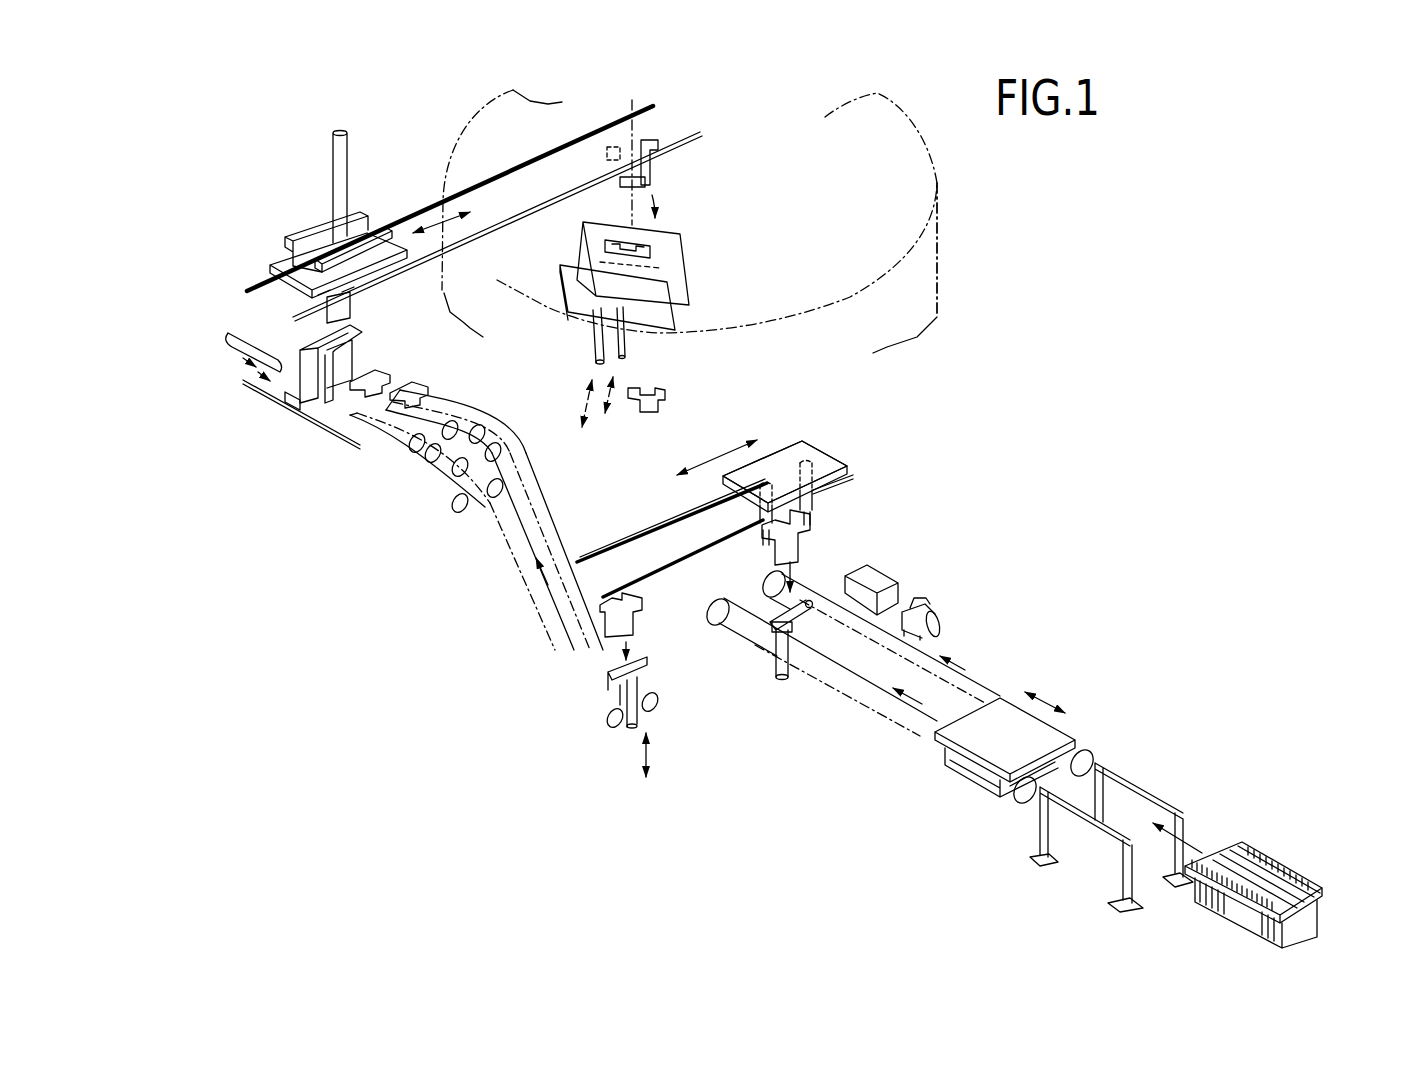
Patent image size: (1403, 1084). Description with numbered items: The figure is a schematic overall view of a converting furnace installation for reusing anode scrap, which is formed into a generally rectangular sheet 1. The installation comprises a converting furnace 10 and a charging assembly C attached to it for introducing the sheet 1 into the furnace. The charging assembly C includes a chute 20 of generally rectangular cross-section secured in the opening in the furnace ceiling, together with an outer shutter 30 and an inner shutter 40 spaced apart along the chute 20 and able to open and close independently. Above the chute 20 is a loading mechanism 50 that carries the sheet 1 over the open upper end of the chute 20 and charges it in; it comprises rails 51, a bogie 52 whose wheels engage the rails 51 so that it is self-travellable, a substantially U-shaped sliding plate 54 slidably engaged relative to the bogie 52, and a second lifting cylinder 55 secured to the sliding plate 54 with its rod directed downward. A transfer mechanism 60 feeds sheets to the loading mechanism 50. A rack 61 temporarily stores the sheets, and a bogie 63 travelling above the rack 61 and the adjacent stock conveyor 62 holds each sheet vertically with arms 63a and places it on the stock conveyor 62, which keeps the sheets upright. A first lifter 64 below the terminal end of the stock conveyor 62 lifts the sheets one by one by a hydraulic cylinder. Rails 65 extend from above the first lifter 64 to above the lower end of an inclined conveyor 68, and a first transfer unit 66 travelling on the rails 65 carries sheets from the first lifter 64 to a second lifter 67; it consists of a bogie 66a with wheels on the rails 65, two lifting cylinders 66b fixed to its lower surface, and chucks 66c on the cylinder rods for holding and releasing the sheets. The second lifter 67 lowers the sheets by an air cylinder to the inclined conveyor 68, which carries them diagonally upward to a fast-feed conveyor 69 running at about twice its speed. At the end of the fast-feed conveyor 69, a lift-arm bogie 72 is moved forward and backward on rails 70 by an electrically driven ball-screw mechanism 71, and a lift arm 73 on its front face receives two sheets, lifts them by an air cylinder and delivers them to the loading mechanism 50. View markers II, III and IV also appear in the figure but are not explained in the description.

The anode scrap sheet 1 is at (352, 303).
The converting furnace 10 is at (937, 190).
The chute 20 is at (694, 307).
The outer shutter 30 is at (565, 280).
The inner shutter 40 is at (665, 335).
The loading mechanism 50 is at (381, 162).
The rails 51 is at (530, 207).
The bogie 52 is at (280, 260).
The sliding plate 54 is at (305, 227).
The second lifting cylinder 55 is at (332, 150).
The transfer mechanism 60 is at (508, 682).
The rack 61 is at (1138, 786).
The stock conveyor 62 is at (842, 698).
The bogie 63 is at (1068, 728).
The arms 63a is at (1020, 800).
The first lifter 64 is at (773, 662).
The rails 65 is at (618, 540).
The first transfer unit 66 is at (806, 447).
The bogie 66a is at (785, 472).
The lifting cylinders 66b is at (757, 513).
The chucks 66c is at (807, 511).
The second lifter 67 is at (630, 722).
The inclined conveyor 68 is at (507, 570).
The fast-feed conveyor 69 is at (438, 404).
The rails 70 is at (340, 437).
The ball-screw mechanism 71 is at (258, 340).
The lift-arm bogie 72 is at (290, 400).
The lift arm 73 is at (325, 408).
The section line II is at (232, 381).
The section line III is at (280, 180).
The section line IV is at (683, 80).
The charging assembly C is at (724, 220).